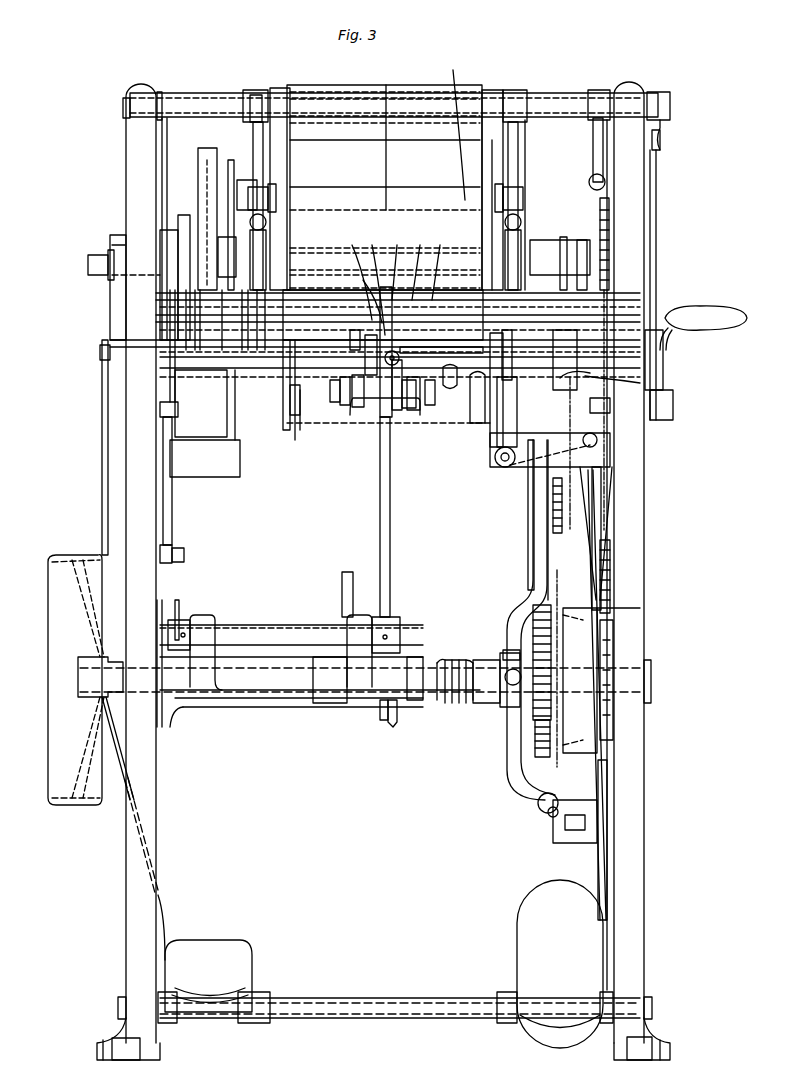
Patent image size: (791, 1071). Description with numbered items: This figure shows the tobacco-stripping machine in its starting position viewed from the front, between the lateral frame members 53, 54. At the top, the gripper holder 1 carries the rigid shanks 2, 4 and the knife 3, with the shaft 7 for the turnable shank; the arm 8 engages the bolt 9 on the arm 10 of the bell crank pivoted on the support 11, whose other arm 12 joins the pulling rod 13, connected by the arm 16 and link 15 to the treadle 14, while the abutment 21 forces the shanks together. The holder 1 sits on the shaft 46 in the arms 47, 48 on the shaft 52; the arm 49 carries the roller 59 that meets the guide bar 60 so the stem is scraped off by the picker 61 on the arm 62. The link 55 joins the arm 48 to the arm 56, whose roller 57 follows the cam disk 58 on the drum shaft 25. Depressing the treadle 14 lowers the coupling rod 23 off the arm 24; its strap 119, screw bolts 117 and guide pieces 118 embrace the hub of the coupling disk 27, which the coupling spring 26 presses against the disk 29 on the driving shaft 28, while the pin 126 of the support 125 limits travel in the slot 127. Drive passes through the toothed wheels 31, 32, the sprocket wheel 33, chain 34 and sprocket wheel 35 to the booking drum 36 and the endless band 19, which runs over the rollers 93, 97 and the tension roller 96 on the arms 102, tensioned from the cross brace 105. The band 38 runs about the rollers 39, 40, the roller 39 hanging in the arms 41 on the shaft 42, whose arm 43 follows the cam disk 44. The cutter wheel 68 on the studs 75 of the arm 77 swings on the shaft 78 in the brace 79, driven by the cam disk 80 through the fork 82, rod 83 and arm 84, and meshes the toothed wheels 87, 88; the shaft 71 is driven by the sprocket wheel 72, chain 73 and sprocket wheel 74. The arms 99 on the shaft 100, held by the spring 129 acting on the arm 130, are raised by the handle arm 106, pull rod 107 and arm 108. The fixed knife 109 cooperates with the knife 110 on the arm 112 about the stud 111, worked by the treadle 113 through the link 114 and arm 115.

The holder of the gripper 1 is at (388, 415).
The shank 2 is at (373, 282).
The knife 3 is at (361, 276).
The shank 4 is at (392, 264).
The shaft 7 is at (412, 408).
The arm 8 is at (415, 264).
The bolt 9 is at (480, 423).
The arm of bell crank lever 10 is at (515, 425).
The support 11 is at (608, 457).
The arm of bell crank lever 12 is at (515, 445).
The pulling rod 13 is at (598, 490).
The treadle 14 is at (540, 903).
The link 15 is at (606, 870).
The arm 16 is at (565, 828).
The endless band 19 is at (320, 150).
The abutment 21 is at (458, 410).
The coupling rod 23 is at (528, 512).
The arm 24 is at (640, 300).
The shaft 25 is at (268, 245).
The coupling spring 26 is at (452, 703).
The coupling disk 27 is at (560, 722).
The driving shaft 28 is at (652, 680).
The coupling disk 29 is at (545, 770).
The toothed wheel 31 is at (535, 712).
The toothed wheel 32 is at (537, 735).
The sprocket wheel 33 is at (607, 655).
The chain 34 is at (610, 552).
The sprocket wheel 35 is at (606, 205).
The booking drum 36 is at (492, 150).
The endless band 38 is at (386, 140).
The roller 39 is at (454, 127).
The roller 40 is at (290, 290).
The arms 41 is at (520, 235).
The shaft 42 is at (162, 296).
The arm 43 is at (580, 268).
The cam disk 44 is at (574, 245).
The shaft 46 is at (439, 264).
The arm 47 is at (525, 140).
The arm 48 is at (256, 130).
The arm 49 is at (333, 402).
The shaft 52 is at (176, 118).
The lateral frame member 53 is at (632, 90).
The lateral frame member 54 is at (140, 88).
The link 55 is at (245, 200).
The arm 56 is at (232, 180).
The roller 57 is at (218, 250).
The cam disk 58 is at (207, 160).
The roller 59 is at (344, 405).
The guide bar 60 is at (342, 590).
The picker 61 is at (380, 712).
The arm 62 is at (392, 720).
The cutter wheel 68 is at (400, 410).
The shaft 71 is at (197, 370).
The sprocket wheel 72 is at (556, 745).
The chain 73 is at (562, 518).
The sprocket wheel 74 is at (640, 385).
The studs 75 is at (428, 410).
The arm 77 is at (378, 540).
The shaft 78 is at (240, 625).
The frame brace 79 is at (203, 615).
The cam disk 80 is at (175, 220).
The fork 82 is at (165, 232).
The rod 83 is at (175, 527).
The arm 84 is at (186, 556).
The toothed wheel 87 is at (365, 345).
The toothed wheel 88 is at (360, 407).
The roller 93 is at (278, 100).
The tension roller 96 is at (292, 430).
The roller 97 is at (302, 408).
The arms 99 is at (515, 105).
The shaft 100 is at (174, 105).
The arms 102 is at (285, 420).
The cross brace 105 is at (168, 728).
The arm 106 is at (718, 330).
The pull rod 107 is at (660, 150).
The arm 108 is at (655, 115).
The fixed knife 109 is at (110, 345).
The knife 110 is at (112, 296).
The stud 111 is at (90, 262).
The arm 112 is at (113, 276).
The treadle 113 is at (215, 947).
The link 114 is at (102, 410).
The arm 115 is at (160, 323).
The screw bolts 117 is at (500, 660).
The guide pieces 118 is at (510, 655).
The strap-shaped member 119 is at (510, 628).
The support 125 is at (607, 780).
The pin 126 is at (548, 815).
The vertical slot 127 is at (538, 800).
The spring 129 is at (606, 180).
The arm 130 is at (595, 120).